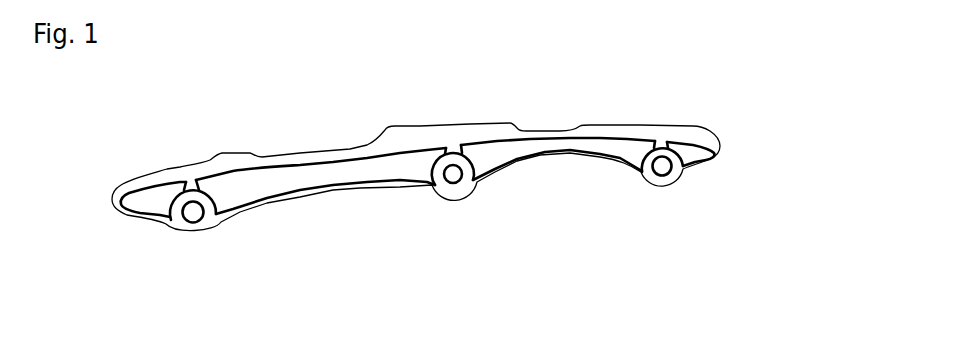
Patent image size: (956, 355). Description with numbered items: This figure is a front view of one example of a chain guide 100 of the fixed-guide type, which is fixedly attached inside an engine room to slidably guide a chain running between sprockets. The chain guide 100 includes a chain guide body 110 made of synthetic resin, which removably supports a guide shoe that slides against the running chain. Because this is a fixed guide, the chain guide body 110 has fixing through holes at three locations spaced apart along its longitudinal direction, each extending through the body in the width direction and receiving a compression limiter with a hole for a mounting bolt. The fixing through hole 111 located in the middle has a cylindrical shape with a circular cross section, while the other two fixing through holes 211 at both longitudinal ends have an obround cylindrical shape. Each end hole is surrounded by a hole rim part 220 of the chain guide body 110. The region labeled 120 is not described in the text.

The chain guide 100 is at (743, 101).
The chain guide body 110 is at (362, 205).
The fixing through hole 111 is at (456, 182).
The middle tubular portion 120 is at (465, 185).
The fixing through hole 211 is at (177, 226).
The hole rim part 220 is at (193, 226).